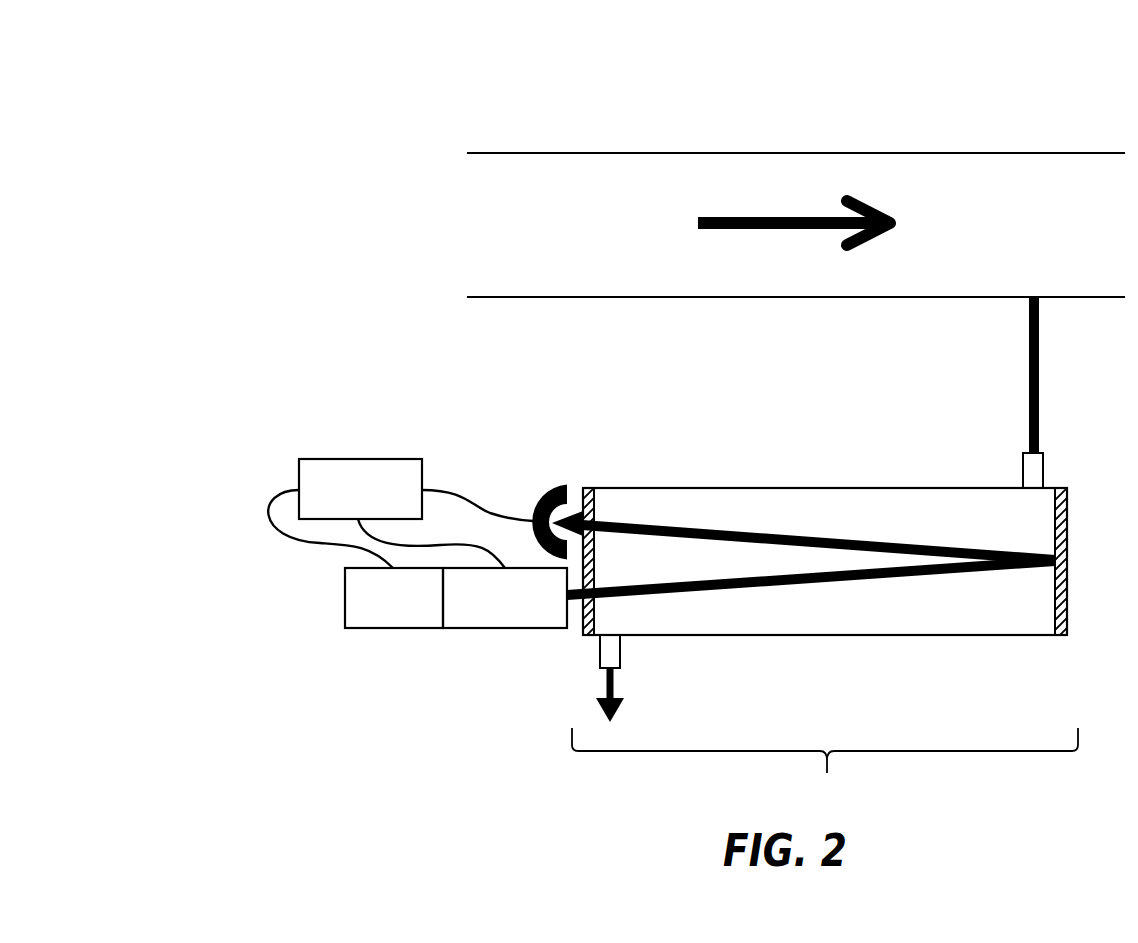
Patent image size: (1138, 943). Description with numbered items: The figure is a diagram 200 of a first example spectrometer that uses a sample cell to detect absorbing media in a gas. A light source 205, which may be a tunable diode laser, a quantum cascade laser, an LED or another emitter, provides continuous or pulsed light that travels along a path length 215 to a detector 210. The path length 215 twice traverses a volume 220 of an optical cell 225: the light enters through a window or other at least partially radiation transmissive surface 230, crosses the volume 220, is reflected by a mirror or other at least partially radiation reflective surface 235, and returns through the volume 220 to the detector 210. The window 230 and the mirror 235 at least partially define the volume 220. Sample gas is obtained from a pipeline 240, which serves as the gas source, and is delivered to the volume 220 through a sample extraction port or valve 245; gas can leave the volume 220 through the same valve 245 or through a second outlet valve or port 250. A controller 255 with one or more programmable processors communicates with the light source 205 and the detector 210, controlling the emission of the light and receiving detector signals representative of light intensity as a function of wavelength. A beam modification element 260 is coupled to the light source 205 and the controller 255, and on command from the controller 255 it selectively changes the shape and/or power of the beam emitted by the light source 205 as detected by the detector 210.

The diagram 200 is at (310, 80).
The light source 205 is at (487, 610).
The detector 210 is at (545, 482).
The path length 215 is at (886, 560).
The volume 220 is at (765, 621).
The optical cell 225 is at (825, 768).
The window 230 is at (578, 629).
The mirror 235 is at (1062, 483).
The pipeline 240 is at (1062, 201).
The sample extraction port or valve 245 is at (1020, 470).
The second outlet valve or port 250 is at (595, 654).
The controller 255 is at (342, 502).
The beam modification element 260 is at (376, 610).